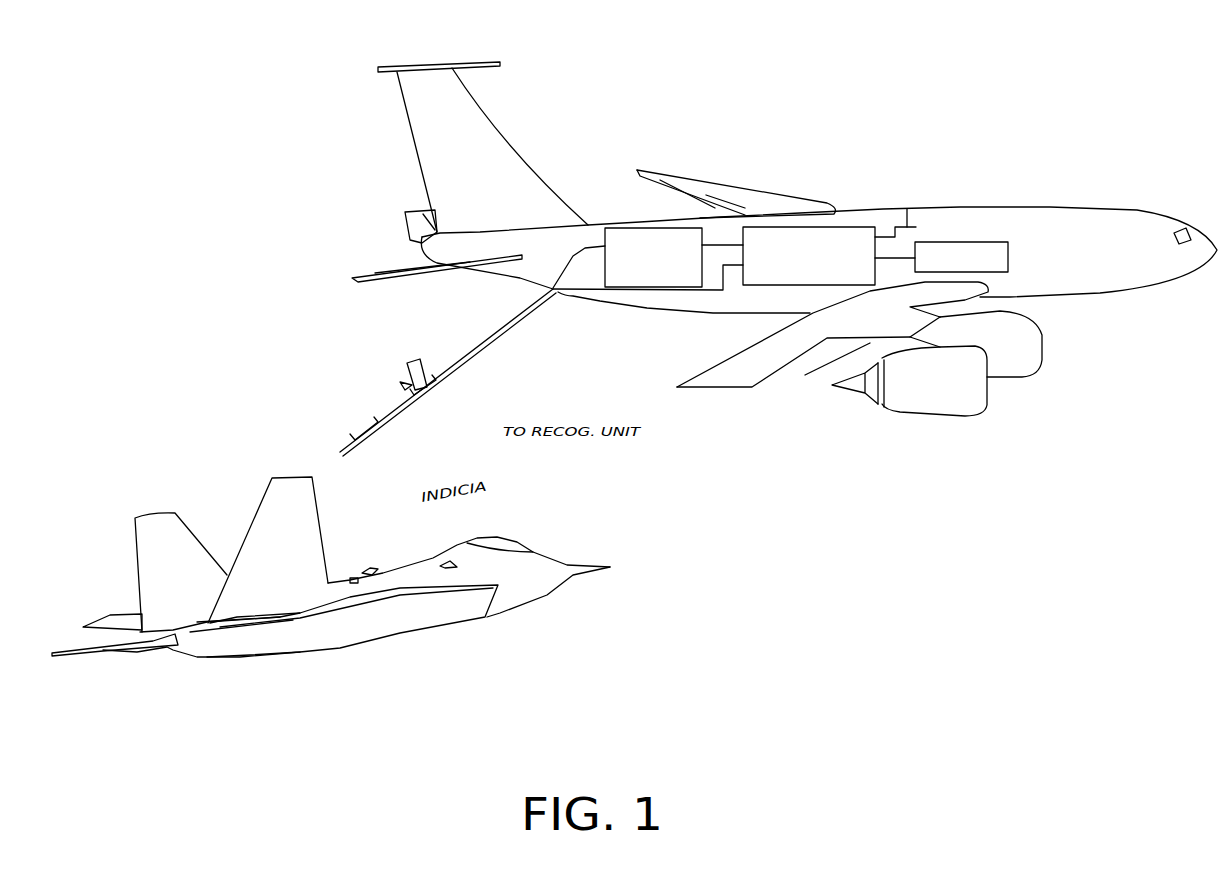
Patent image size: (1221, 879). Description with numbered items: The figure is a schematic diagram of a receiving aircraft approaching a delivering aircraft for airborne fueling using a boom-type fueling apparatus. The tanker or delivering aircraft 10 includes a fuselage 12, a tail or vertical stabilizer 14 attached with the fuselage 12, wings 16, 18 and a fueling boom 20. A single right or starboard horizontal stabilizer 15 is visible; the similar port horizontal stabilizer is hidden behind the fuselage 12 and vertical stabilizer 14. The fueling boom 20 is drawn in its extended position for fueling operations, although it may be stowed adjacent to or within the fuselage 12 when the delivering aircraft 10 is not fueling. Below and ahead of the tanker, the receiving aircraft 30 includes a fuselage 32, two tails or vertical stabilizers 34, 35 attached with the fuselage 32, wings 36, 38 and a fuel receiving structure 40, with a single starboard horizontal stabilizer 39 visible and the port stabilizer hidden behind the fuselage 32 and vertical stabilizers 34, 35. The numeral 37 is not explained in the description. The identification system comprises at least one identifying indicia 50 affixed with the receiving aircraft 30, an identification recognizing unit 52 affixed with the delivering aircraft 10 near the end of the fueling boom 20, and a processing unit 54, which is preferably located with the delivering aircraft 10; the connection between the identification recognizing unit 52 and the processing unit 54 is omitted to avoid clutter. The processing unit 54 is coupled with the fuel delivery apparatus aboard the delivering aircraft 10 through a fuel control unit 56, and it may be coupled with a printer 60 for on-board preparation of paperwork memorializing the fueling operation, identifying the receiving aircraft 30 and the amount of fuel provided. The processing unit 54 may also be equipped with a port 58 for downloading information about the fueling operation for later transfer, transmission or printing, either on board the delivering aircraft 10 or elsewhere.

The delivering aircraft 10 is at (862, 83).
The fuselage 12 is at (1070, 206).
The vertical stabilizer 14 is at (505, 138).
The horizontal stabilizer 15 is at (390, 265).
The wing 16 is at (690, 170).
The wing 18 is at (788, 380).
The fueling boom 20 is at (503, 355).
The identification recognizing unit 52 is at (432, 388).
The processing unit 54 is at (842, 227).
The fuel control unit 56 is at (648, 227).
The port 58 is at (907, 210).
The printer 60 is at (1010, 254).
The receiving aircraft 30 is at (512, 655).
The fuselage 32 is at (517, 605).
The vertical stabilizer 34 is at (153, 518).
The vertical stabilizer 35 is at (290, 477).
The wing 36 is at (118, 613).
The wing 37 is at (235, 637).
The wing 38 is at (378, 617).
The horizontal stabilizer 39 is at (83, 650).
The fuel receiving structure 40 is at (368, 570).
The identifying indicia 50 is at (353, 578).